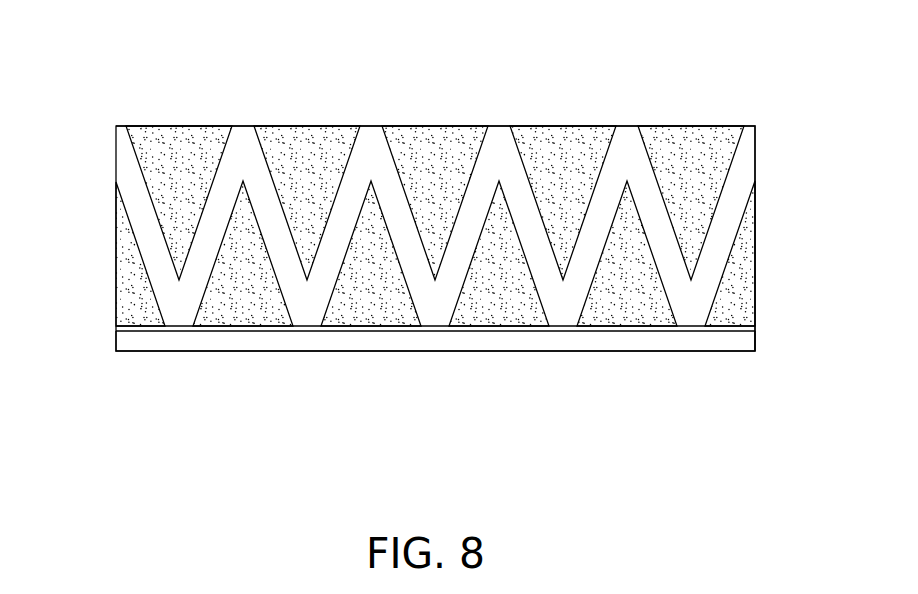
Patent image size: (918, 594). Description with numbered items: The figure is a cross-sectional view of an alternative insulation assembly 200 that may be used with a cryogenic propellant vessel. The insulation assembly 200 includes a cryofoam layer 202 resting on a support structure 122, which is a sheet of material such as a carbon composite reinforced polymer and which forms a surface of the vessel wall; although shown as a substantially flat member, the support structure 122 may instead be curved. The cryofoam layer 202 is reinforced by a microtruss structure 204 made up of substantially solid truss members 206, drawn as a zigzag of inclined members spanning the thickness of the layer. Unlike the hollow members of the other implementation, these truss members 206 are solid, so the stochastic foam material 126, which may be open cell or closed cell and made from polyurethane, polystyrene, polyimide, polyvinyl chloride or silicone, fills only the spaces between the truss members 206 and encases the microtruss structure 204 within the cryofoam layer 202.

The insulation assembly 200 is at (78, 124).
The cryofoam layer 202 is at (787, 188).
The microtruss structure 204 is at (629, 137).
The truss members 206 is at (268, 168).
The foam material 126 is at (733, 295).
The support structure 122 is at (263, 337).